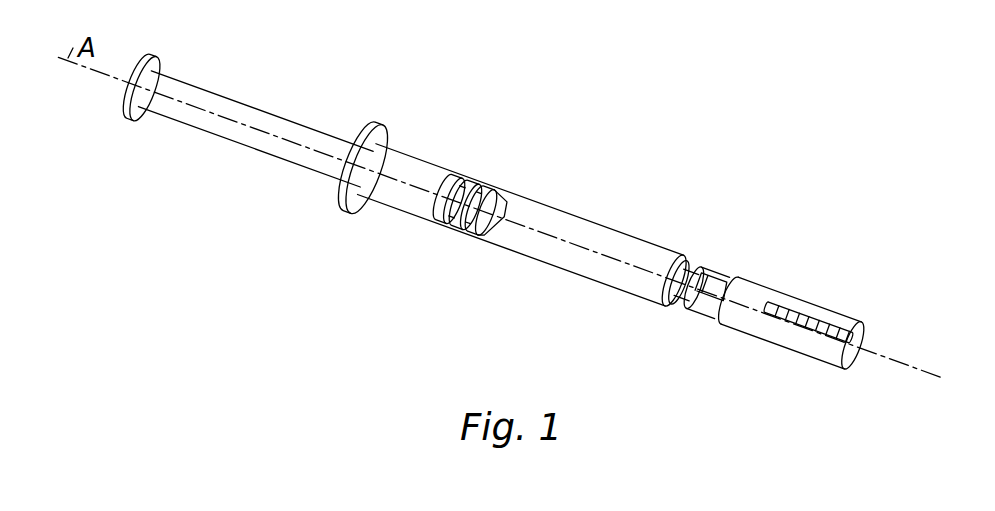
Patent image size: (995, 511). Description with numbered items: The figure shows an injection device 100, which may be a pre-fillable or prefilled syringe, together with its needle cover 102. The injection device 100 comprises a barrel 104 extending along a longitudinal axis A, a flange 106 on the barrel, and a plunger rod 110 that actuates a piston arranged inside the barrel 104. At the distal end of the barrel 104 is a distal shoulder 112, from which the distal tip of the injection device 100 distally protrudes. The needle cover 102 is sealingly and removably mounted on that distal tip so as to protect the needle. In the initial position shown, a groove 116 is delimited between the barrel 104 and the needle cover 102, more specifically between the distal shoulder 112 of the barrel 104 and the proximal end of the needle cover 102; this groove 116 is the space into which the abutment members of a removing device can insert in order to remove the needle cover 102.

The injection device 100 is at (510, 97).
The needle cover 102 is at (830, 310).
The barrel 104 is at (540, 261).
The flange 106 is at (338, 196).
The plunger rod 110 is at (266, 112).
The distal shoulder 112 is at (672, 305).
The groove 116 is at (702, 266).